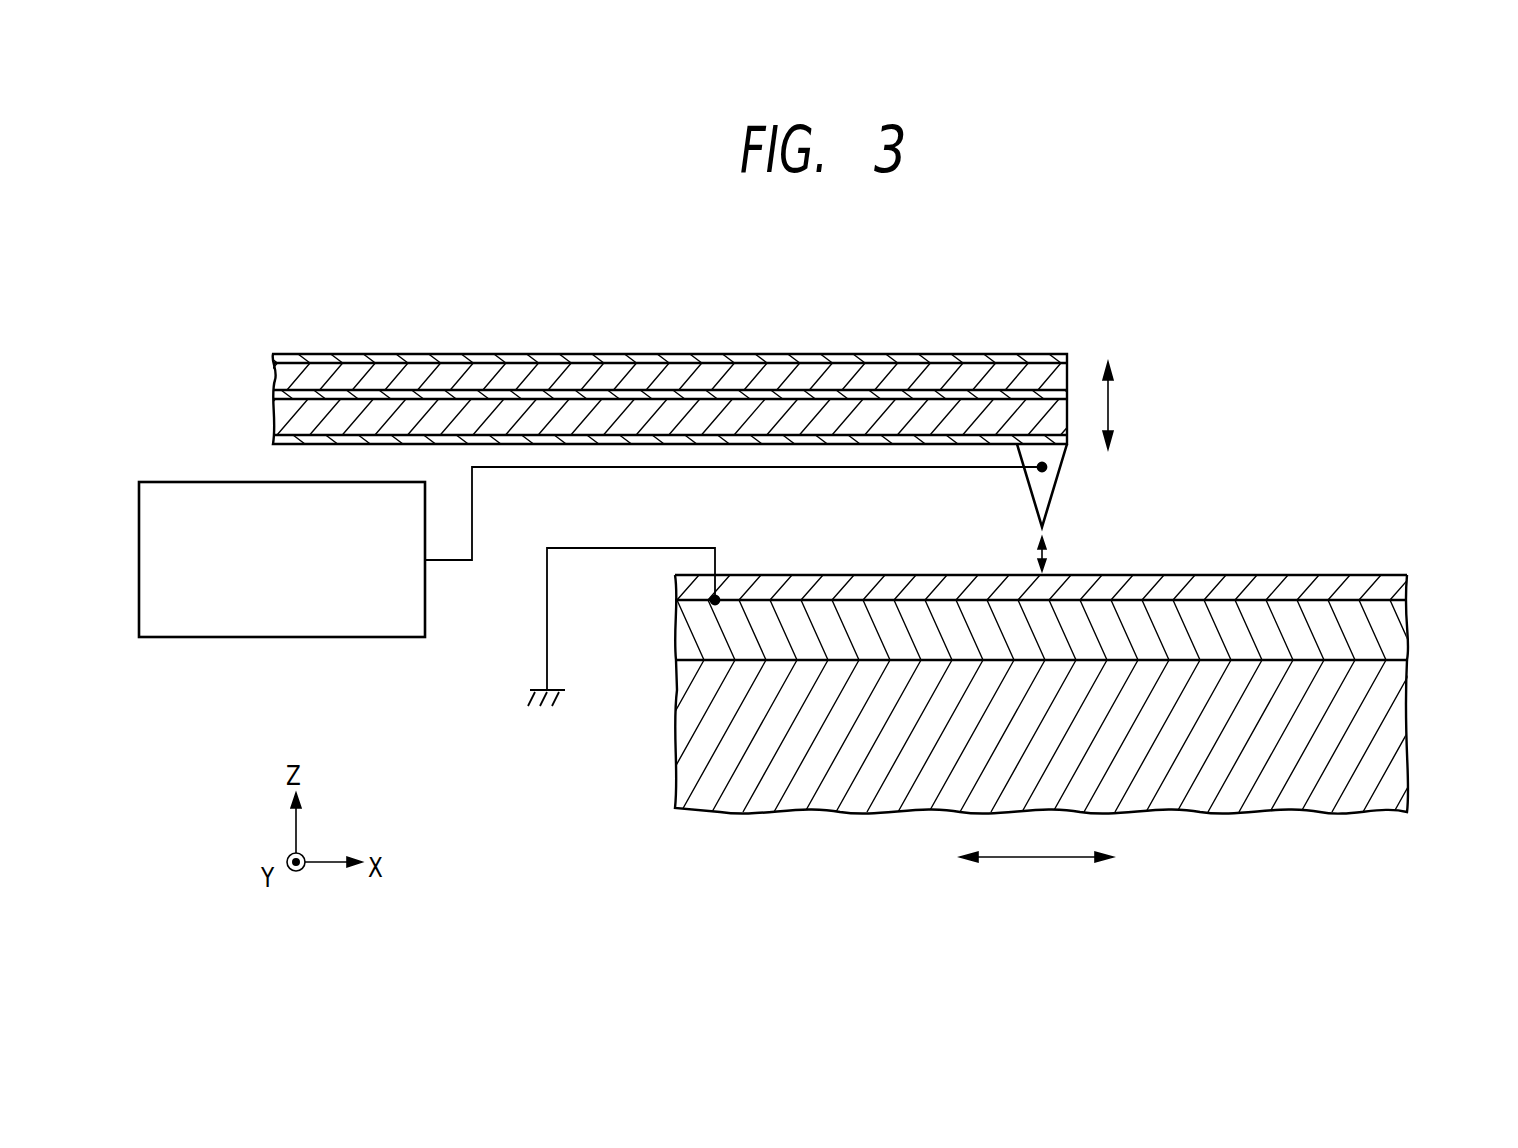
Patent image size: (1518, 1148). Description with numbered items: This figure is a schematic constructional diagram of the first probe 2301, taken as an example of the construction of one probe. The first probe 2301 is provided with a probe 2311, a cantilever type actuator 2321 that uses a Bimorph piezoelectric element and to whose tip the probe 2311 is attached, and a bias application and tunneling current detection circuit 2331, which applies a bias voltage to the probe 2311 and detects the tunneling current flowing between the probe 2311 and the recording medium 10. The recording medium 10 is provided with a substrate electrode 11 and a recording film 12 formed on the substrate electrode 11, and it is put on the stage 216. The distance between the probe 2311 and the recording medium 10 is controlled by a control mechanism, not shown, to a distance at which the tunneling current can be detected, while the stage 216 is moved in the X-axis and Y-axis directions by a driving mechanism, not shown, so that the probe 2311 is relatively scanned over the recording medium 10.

The first probe 2301 is at (714, 373).
The cantilever type actuator 2321 is at (928, 354).
The probe 2311 is at (1050, 502).
The bias application and tunneling current detection circuit 2331 is at (285, 637).
The recording medium 10 is at (1028, 655).
The recording film 12 is at (1387, 588).
The substrate electrode 11 is at (1382, 640).
The stage 216 is at (1382, 717).